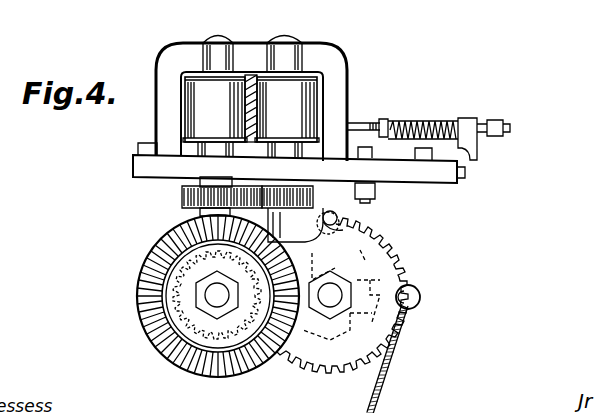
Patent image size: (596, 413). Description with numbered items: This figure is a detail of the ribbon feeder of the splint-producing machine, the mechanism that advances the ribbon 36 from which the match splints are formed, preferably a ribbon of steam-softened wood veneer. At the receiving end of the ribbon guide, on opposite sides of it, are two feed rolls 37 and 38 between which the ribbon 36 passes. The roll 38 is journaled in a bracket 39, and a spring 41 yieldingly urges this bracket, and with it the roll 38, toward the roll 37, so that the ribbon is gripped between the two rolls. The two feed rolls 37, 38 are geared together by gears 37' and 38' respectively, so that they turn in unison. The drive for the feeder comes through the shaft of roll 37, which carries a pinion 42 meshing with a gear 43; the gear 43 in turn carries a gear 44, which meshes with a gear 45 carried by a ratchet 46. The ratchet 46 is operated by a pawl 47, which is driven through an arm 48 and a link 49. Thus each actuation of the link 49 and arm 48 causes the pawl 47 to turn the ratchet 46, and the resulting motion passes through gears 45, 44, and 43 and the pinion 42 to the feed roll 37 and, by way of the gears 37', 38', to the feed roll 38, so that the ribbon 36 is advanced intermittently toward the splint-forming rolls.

The ribbon 36 is at (252, 76).
The feed roll 37 is at (215, 109).
The feed roll 38 is at (287, 109).
The bracket 39 is at (342, 109).
The spring 41 is at (408, 120).
The gear 37' is at (182, 198).
The gear 38' is at (350, 199).
The pinion 42 is at (200, 237).
The gear 43 is at (137, 310).
The gear 44 is at (163, 362).
The gear 45 is at (304, 366).
The ratchet 46 is at (357, 277).
The pawl 47 is at (343, 218).
The arm 48 is at (420, 295).
The link 49 is at (393, 373).